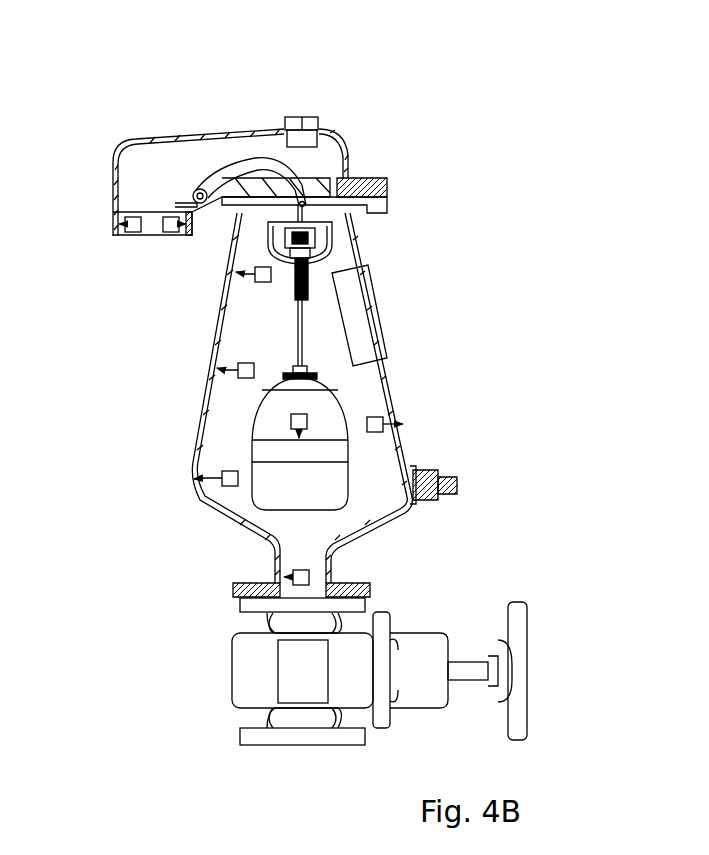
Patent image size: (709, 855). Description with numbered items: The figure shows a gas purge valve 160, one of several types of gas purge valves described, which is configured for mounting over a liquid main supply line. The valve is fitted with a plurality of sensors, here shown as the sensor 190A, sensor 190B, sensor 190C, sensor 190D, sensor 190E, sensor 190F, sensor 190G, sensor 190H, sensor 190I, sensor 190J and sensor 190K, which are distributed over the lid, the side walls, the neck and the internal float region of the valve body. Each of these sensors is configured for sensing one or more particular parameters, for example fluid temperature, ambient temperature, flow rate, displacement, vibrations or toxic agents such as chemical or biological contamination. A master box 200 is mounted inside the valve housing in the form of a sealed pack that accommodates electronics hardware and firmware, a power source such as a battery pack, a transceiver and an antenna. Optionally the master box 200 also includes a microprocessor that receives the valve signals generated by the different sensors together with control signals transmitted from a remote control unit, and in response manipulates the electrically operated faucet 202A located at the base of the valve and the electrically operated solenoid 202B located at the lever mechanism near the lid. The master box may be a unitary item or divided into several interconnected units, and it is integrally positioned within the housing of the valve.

The gas purge valve 160 is at (478, 226).
The sensor 190A is at (375, 432).
The sensor 190B is at (309, 577).
The sensor 190C is at (230, 486).
The sensor 190D is at (246, 378).
The sensor 190E is at (263, 282).
The sensor 190F is at (166, 232).
The sensor 190G is at (128, 232).
The sensor 190H is at (196, 145).
The sensor 190I is at (243, 108).
The sensor 190J is at (348, 208).
The sensor 190K is at (307, 418).
The master box 200 is at (368, 315).
The electrically operated faucet 202A is at (298, 670).
The electrically operated solenoid 202B is at (218, 215).